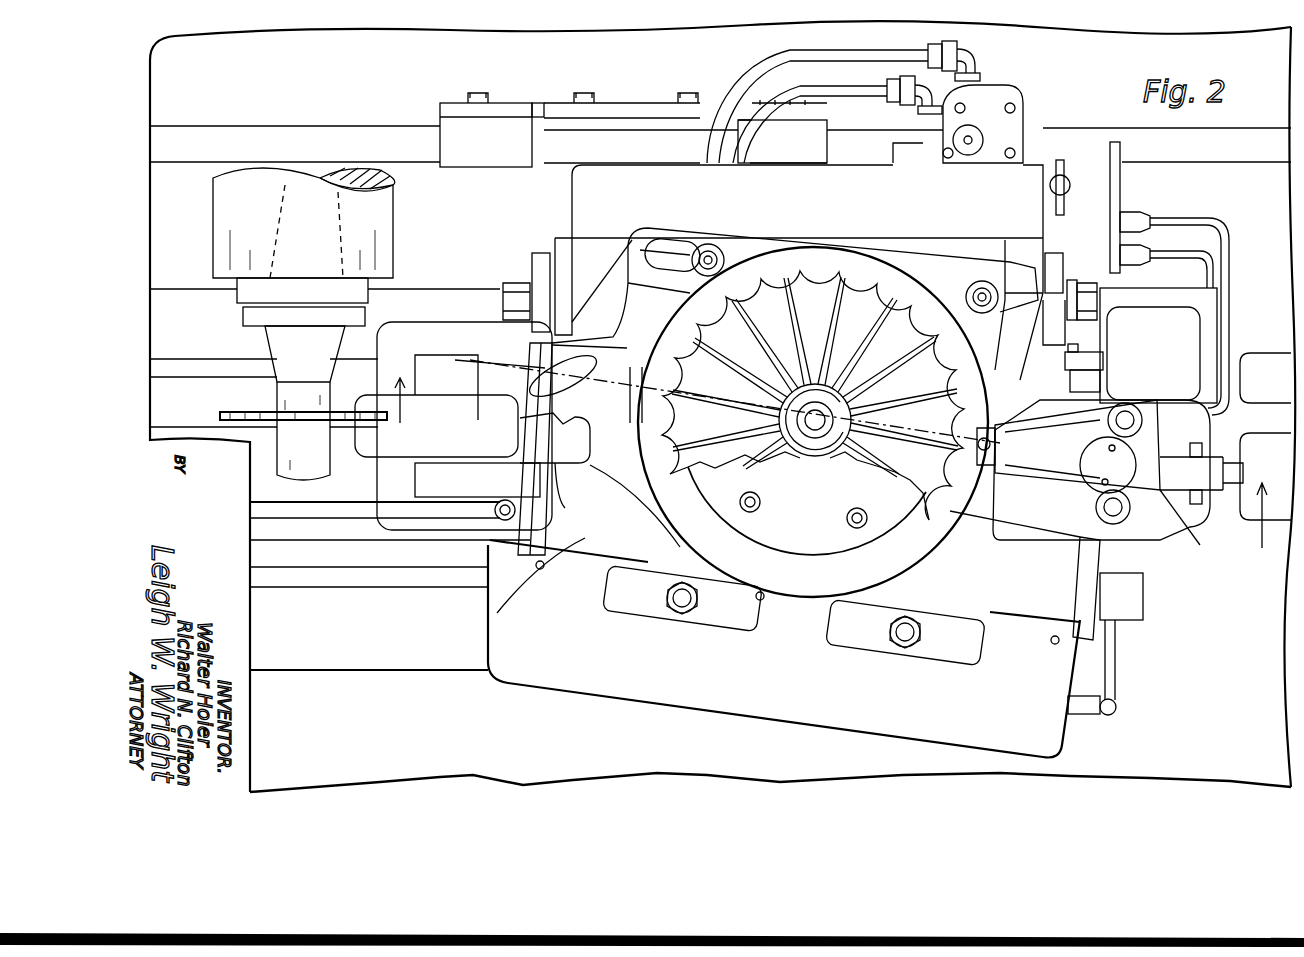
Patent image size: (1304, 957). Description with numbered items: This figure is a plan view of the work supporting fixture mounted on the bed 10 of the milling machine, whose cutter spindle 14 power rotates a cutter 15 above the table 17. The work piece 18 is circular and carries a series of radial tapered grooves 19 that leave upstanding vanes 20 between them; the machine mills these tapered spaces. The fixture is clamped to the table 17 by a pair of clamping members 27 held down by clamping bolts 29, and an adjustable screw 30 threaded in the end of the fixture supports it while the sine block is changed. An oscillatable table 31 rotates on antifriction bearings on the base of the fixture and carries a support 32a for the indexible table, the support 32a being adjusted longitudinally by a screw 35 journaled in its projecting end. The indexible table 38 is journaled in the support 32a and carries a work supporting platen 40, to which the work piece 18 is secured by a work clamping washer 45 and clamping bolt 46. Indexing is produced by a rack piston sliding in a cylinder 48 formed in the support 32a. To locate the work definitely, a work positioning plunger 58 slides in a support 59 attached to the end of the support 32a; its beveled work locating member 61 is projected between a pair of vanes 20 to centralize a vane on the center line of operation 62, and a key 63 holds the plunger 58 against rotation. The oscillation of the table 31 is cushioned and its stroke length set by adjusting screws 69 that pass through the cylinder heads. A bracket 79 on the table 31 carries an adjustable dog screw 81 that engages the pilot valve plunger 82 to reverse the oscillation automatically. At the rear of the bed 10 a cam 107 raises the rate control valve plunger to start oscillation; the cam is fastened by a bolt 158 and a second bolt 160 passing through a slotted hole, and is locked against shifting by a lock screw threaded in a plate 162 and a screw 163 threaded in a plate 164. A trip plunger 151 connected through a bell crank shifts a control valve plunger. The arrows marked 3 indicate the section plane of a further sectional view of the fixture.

The bed 10 is at (422, 750).
The cutter spindle 14 is at (298, 350).
The cutter 15 is at (235, 410).
The table 17 is at (215, 331).
The work piece 18 is at (715, 300).
The radial tapered grooves 19 is at (810, 300).
The upstanding vanes 20 is at (845, 302).
The clamping members 27 is at (430, 368).
The clamping bolts 29 is at (495, 358).
The adjustable screw 30 is at (535, 425).
The oscillatable table 31 is at (1013, 290).
The support 32a is at (607, 530).
The screw 35 is at (1235, 540).
The indexible table 38 is at (807, 580).
The work supporting platen 40 is at (805, 515).
The work clamping washer 45 is at (805, 442).
The clamping bolt 46 is at (826, 442).
The cylinder 48 is at (1120, 612).
The work positioning plunger 58 is at (1240, 570).
The support 59 is at (1165, 568).
The work locating member 61 is at (985, 520).
The center line of operation 62 is at (693, 382).
The key 63 is at (1120, 470).
The adjusting screws 69 is at (533, 275).
The bracket 79 is at (1045, 333).
The adjustable dog screw 81 is at (1075, 352).
The pilot valve plunger 82 is at (1100, 390).
The cam 107 is at (625, 116).
The trip plunger 151 is at (1070, 185).
The bolt 158 is at (690, 95).
The second bolt 160 is at (583, 96).
The plate 162 is at (827, 110).
The screw 163 is at (548, 71).
The plate 164 is at (449, 103).
The section line 3 is at (832, 463).